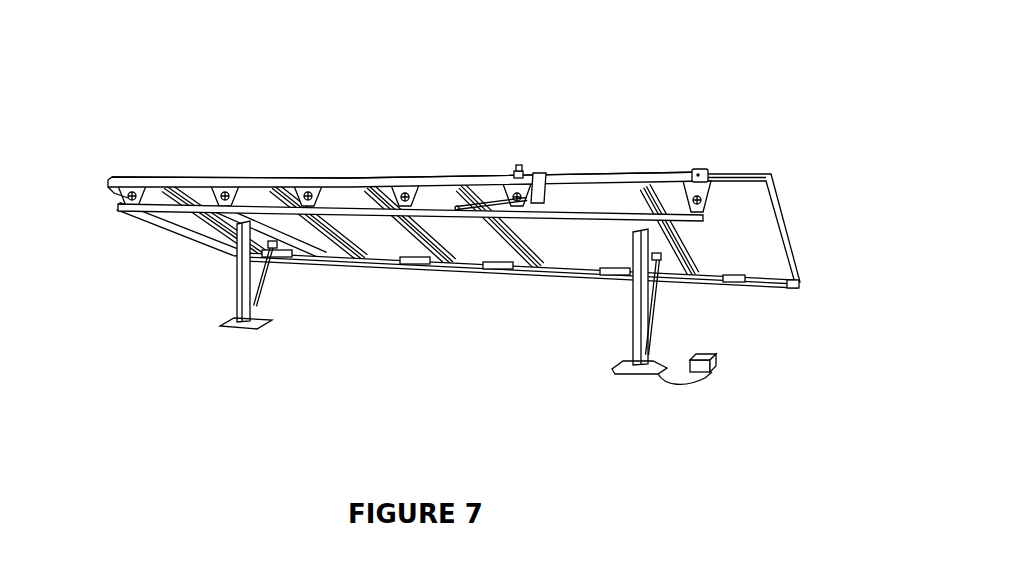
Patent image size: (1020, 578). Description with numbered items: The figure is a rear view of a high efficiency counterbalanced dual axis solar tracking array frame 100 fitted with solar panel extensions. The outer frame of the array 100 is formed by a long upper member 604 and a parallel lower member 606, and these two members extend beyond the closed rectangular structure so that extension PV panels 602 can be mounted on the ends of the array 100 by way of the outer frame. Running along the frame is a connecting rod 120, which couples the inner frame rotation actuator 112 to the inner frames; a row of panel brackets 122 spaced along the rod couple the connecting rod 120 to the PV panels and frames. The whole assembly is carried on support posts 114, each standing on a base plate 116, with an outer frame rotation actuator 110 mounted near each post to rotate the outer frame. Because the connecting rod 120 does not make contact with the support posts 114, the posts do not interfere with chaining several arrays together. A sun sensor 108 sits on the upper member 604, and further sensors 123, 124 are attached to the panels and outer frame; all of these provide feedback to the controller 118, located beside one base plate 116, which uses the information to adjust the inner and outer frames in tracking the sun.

The high efficiency counterbalanced dual axis solar tracking array frame 100 is at (590, 98).
The sun sensor 108 is at (522, 177).
The outer frame rotation actuator 110 is at (270, 287).
The inner frame rotation actuator 112 is at (483, 198).
The support post 114 is at (237, 272).
The base plate 116 is at (258, 327).
The controller 118 is at (713, 370).
The connecting rod 120 is at (118, 210).
The panel bracket 122 is at (127, 178).
The sensor 123 is at (798, 288).
The sensor 124 is at (703, 167).
The extension PV panel 602 is at (182, 228).
The upper member 604 is at (577, 175).
The lower member 606 is at (477, 275).